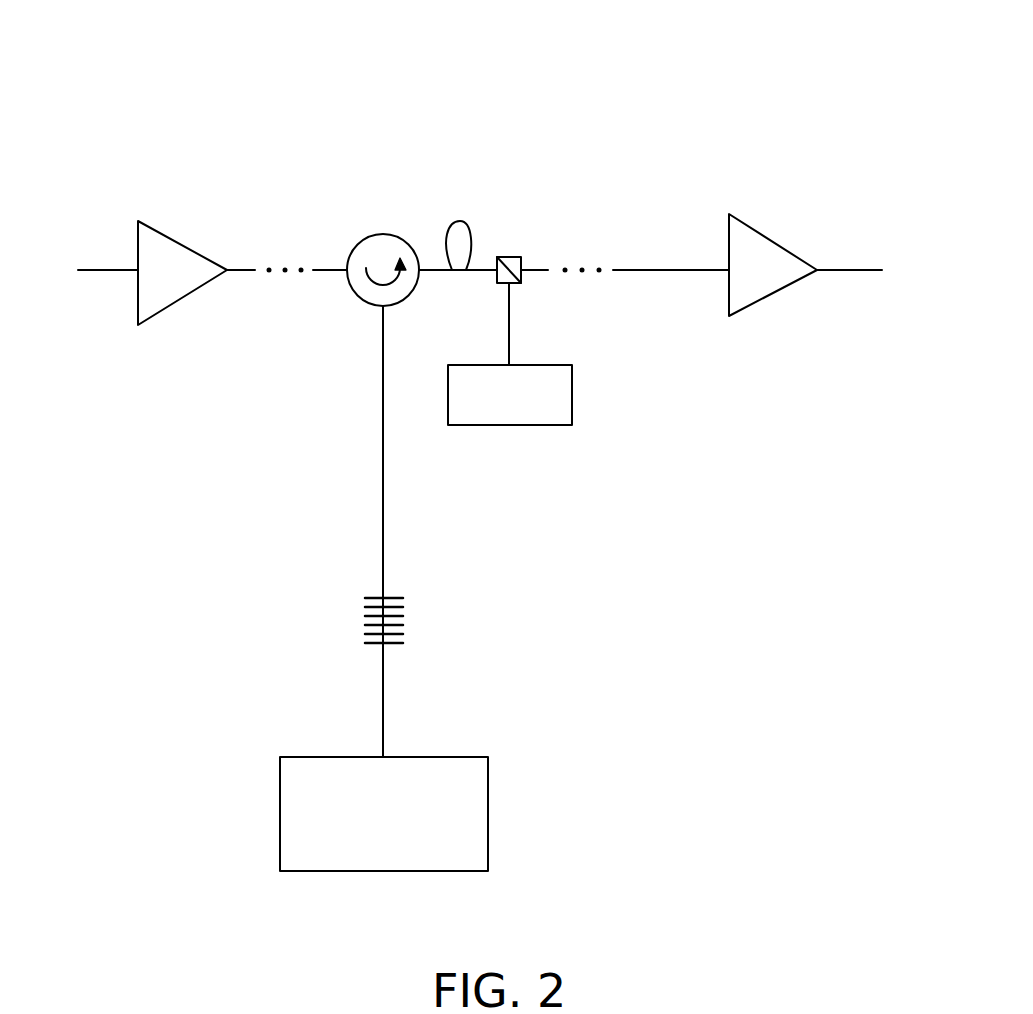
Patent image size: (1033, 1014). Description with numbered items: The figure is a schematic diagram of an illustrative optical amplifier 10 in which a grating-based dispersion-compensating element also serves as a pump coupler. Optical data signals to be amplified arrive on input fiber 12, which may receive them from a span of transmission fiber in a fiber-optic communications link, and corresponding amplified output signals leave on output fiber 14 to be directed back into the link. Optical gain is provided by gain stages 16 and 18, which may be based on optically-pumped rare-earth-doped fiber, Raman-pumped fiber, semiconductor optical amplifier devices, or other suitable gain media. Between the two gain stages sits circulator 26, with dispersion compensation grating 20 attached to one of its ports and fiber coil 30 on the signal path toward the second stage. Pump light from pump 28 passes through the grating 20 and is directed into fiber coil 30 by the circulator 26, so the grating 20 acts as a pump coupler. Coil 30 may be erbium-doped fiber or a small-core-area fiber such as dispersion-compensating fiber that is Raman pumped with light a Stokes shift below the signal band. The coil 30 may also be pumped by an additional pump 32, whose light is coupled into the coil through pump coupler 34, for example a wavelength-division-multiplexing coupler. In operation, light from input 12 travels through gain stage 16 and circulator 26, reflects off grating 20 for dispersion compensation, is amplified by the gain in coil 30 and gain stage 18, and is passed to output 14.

The optical amplifier 10 is at (638, 73).
The input fiber 12 is at (82, 270).
The output fiber 14 is at (850, 271).
The gain stage 16 is at (172, 303).
The gain stage 18 is at (775, 290).
The dispersion compensation grating 20 is at (434, 612).
The circulator 26 is at (397, 235).
The pump 28 is at (488, 793).
The fiber coil 30 is at (491, 221).
The pump 32 is at (572, 418).
The pump coupler 34 is at (517, 257).